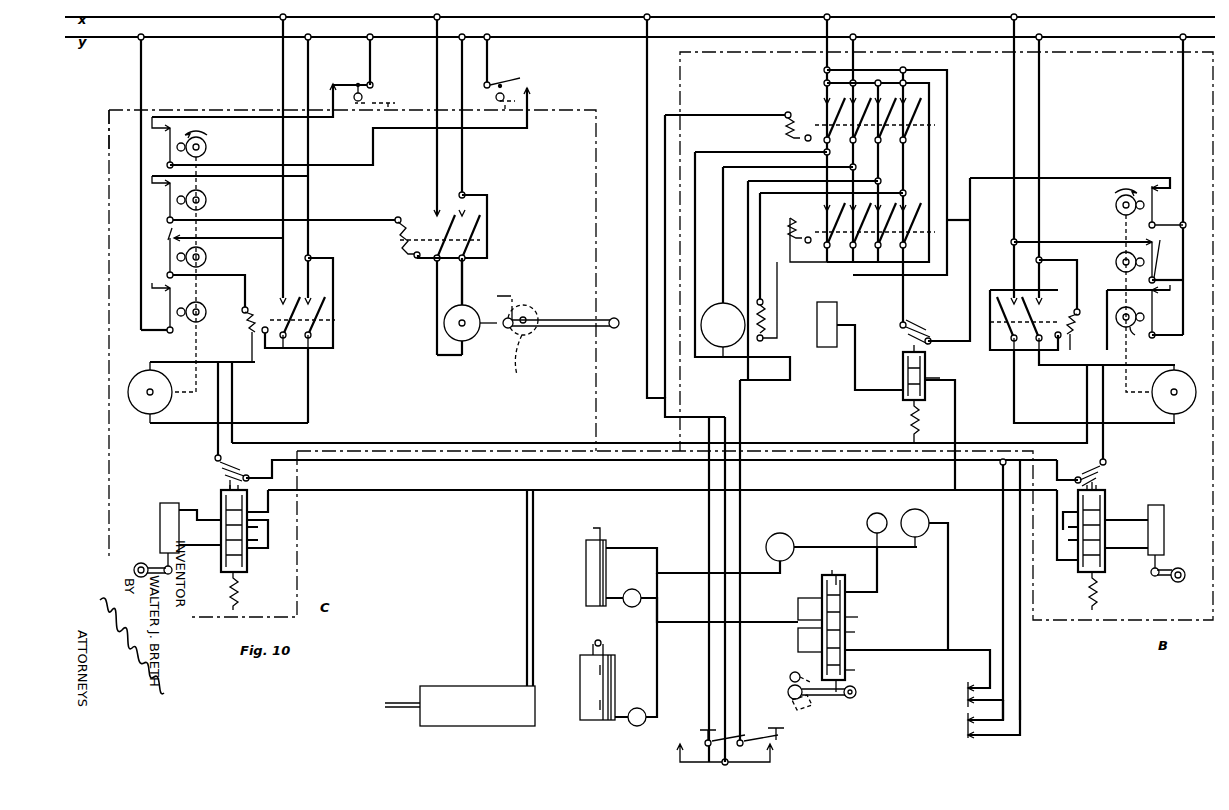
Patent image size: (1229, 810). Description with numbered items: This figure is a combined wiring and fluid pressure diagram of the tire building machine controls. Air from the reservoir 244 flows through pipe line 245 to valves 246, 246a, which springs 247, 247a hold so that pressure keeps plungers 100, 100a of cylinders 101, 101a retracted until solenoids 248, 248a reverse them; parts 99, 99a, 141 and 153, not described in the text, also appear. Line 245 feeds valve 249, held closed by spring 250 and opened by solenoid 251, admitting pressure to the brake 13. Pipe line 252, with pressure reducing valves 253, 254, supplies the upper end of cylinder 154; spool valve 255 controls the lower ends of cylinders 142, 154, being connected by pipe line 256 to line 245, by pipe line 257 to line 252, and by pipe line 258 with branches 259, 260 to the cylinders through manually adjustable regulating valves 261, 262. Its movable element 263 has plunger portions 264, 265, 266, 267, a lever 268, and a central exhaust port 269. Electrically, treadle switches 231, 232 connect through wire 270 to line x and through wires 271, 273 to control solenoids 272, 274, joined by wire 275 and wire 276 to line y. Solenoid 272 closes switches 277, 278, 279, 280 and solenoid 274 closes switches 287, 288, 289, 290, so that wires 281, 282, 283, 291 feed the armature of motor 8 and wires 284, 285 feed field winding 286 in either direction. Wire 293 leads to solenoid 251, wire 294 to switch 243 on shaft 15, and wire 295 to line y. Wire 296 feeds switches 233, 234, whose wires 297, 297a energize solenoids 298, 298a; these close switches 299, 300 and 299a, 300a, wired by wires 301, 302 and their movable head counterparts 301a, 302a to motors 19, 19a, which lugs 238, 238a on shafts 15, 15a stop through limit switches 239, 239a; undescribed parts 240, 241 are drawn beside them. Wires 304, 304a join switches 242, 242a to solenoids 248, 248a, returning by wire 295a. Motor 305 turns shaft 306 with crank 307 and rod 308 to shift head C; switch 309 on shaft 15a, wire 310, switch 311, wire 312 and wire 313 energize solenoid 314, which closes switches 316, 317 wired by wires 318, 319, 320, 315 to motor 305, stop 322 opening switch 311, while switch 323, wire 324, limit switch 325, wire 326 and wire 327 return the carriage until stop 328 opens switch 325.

The motor 8 is at (716, 303).
The brake 13 is at (827, 352).
The shaft 15 is at (1126, 226).
The shaft 15a is at (205, 182).
The actuating motor 19 is at (1175, 417).
The operating motor 19a is at (155, 417).
The roller 99 is at (1183, 585).
The roller 99a is at (147, 566).
The plunger 100 is at (1160, 568).
The plunger 100a is at (178, 572).
The cylinder 101 is at (1164, 513).
The cylinder 101a is at (157, 504).
The port 141 is at (617, 645).
The cylinder 142 is at (626, 682).
The port 153 is at (603, 538).
The cylinder 154 is at (590, 570).
The forward treadle switch 231 is at (700, 730).
The reverse treadle switch 232 is at (760, 728).
The switch 233 is at (960, 732).
The switch 234 is at (962, 698).
The stop lugs 238 is at (1117, 260).
The lug 238a is at (204, 264).
The limit switch 239 is at (1169, 259).
The limit switch 239a is at (167, 252).
The armature 240 is at (1138, 333).
The solenoid 241 is at (1117, 215).
The switch 242 is at (1155, 307).
The switch 242a is at (170, 290).
The switch 243 is at (1147, 216).
The reservoir 244 is at (483, 686).
The pipe line 245 is at (446, 493).
The valve 246 is at (1102, 528).
The valve 246a is at (242, 567).
The spring 247 is at (1098, 595).
The spring 247a is at (238, 603).
The solenoid 248 is at (1104, 472).
The solenoid 248a is at (264, 466).
The valve 249 is at (925, 397).
The spring 250 is at (908, 417).
The solenoid 251 is at (905, 342).
The pipe line 252 is at (655, 545).
The pressure reducing valve 253 is at (923, 538).
The pressure reducing valve 254 is at (780, 532).
The regulating valve 255 is at (848, 602).
The pipe line 256 is at (948, 605).
The pipe line 257 is at (880, 582).
The pipe line 258 is at (758, 620).
The branch 259 is at (807, 598).
The branch 260 is at (798, 643).
The regulating valve 261 is at (630, 727).
The regulating valve 262 is at (640, 585).
The movable element 263 is at (830, 692).
The plunger portion 264 is at (844, 577).
The plunger portion 265 is at (848, 619).
The plunger portion 266 is at (848, 635).
The plunger portion 267 is at (848, 665).
The lever 268 is at (851, 693).
The central exhaust port 269 is at (853, 621).
The wire 270 is at (648, 105).
The wire 271 is at (700, 118).
The control solenoid 272 is at (785, 126).
The wire 273 is at (742, 415).
The control solenoid 274 is at (805, 235).
The wire 275 is at (941, 162).
The wire 276 is at (853, 43).
The switch 277 is at (825, 105).
The switch 278 is at (828, 143).
The switch 279 is at (897, 108).
The switch 280 is at (912, 117).
The wire 281 is at (725, 154).
The wire 282 is at (727, 198).
The wire 283 is at (825, 62).
The wire 284 is at (758, 223).
The wire 285 is at (765, 245).
The field winding 286 is at (762, 342).
The switch 287 is at (843, 265).
The switch 288 is at (858, 265).
The switch 289 is at (903, 282).
The switch 290 is at (947, 220).
The wire 291 is at (878, 260).
The wire 293 is at (903, 323).
The wire 294 is at (973, 213).
The wire 295 is at (1183, 120).
The wire 295a is at (140, 98).
The wire 296 is at (1003, 652).
The wire 297 is at (1020, 680).
The wire 297a is at (972, 660).
The solenoid 298 is at (1071, 310).
The solenoid 298a is at (253, 358).
The switch 299 is at (1010, 343).
The switch 299a is at (312, 247).
The switch 300 is at (1040, 346).
The switch 300a is at (326, 310).
The wire 301 is at (1014, 72).
The conductor 301a is at (283, 61).
The wire 302 is at (1039, 133).
The conductor 302a is at (237, 232).
The wire 304 is at (1103, 410).
The wire 304a is at (218, 405).
The motor 305 is at (473, 340).
The shaft 306 is at (532, 335).
The crank 307 is at (537, 363).
The rod 308 is at (577, 327).
The switch 309 is at (175, 115).
The wire 310 is at (371, 72).
The switch 311 is at (343, 78).
The wire 312 is at (229, 115).
The wire 313 is at (239, 168).
The motor control solenoid 314 is at (398, 252).
The wire 315 is at (468, 172).
The switch 316 is at (435, 217).
The switch 317 is at (485, 231).
The wire 318 is at (437, 306).
The wire 319 is at (485, 288).
The wire 320 is at (437, 171).
The stop 322 is at (402, 98).
The second control switch 323 is at (170, 210).
The wire 324 is at (500, 61).
The limit switch 325 is at (523, 80).
The wire 326 is at (370, 154).
The wire 327 is at (336, 220).
The second stop 328 is at (483, 98).